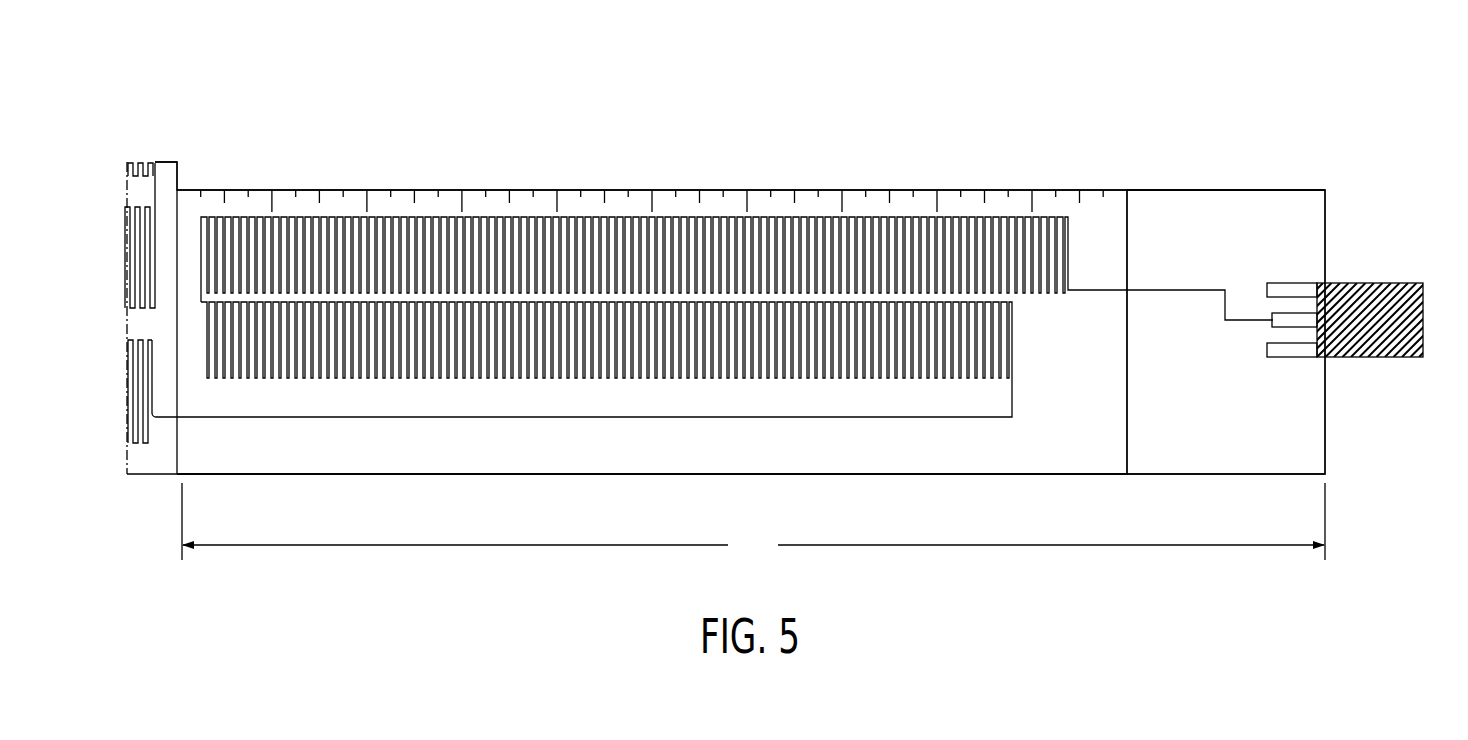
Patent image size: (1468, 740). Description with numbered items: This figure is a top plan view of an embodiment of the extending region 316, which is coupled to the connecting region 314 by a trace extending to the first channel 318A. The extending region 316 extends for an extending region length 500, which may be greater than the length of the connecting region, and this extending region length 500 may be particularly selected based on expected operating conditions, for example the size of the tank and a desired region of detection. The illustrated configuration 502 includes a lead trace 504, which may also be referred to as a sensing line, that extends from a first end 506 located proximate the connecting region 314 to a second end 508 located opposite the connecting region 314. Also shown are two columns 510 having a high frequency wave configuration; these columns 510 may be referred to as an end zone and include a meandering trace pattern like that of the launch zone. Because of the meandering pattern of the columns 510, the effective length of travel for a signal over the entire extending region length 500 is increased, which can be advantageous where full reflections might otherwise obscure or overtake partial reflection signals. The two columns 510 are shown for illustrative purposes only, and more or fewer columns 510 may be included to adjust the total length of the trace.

The connecting region 314 is at (183, 144).
The extending region 316 is at (706, 103).
The first channel 318A is at (143, 445).
The extending region length 500 is at (753, 521).
The configuration 502 is at (1033, 154).
The lead trace 504 is at (278, 458).
The first end 506 is at (214, 151).
The second end 508 is at (1206, 154).
The columns 510 is at (1123, 255).